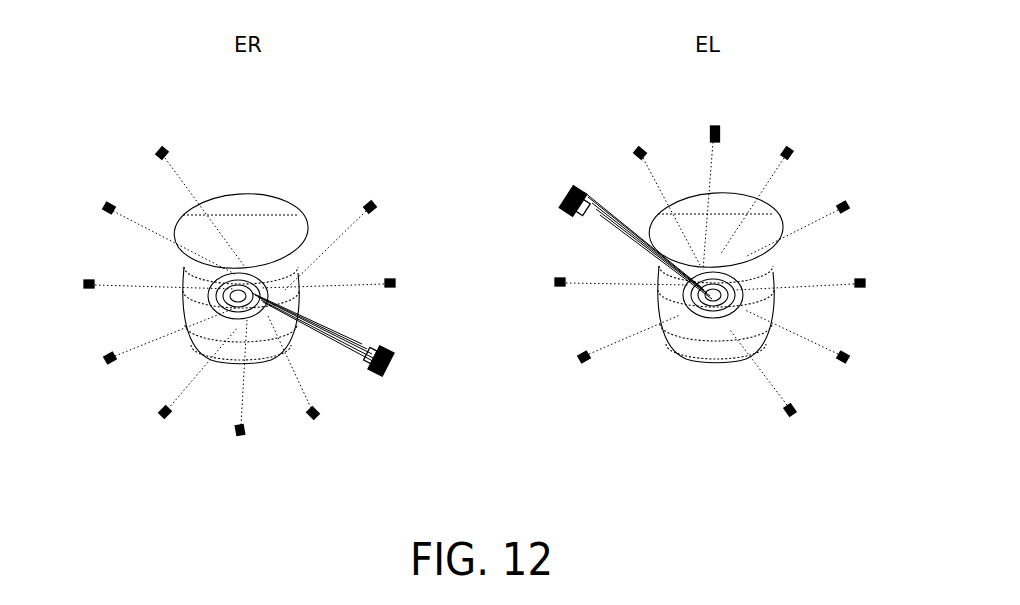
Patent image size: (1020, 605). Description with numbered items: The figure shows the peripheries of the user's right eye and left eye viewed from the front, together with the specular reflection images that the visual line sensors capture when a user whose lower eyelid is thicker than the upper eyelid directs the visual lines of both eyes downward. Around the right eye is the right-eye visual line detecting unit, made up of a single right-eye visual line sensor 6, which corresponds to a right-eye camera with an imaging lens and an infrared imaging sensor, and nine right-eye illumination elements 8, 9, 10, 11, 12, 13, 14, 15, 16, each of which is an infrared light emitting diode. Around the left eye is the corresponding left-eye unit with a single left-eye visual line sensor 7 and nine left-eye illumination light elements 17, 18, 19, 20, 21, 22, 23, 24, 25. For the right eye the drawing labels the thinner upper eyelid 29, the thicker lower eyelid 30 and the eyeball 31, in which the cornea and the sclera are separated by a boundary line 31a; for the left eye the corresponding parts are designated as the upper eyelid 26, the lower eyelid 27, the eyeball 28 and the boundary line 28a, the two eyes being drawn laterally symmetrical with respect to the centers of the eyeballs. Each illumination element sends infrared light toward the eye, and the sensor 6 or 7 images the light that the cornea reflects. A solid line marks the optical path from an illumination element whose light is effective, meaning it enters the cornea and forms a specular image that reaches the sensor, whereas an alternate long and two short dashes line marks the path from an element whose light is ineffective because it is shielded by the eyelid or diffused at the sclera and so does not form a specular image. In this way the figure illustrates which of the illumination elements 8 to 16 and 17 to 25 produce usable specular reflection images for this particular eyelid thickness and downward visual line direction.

The right-eye visual line sensor 6 is at (388, 374).
The left-eye visual line sensor 7 is at (567, 188).
The right-eye illumination element 8 is at (163, 149).
The right-eye illumination element 9 is at (103, 206).
The right-eye illumination element 10 is at (92, 279).
The right-eye illumination element 11 is at (106, 358).
The right-eye illumination element 12 is at (161, 414).
The right-eye illumination element 13 is at (241, 436).
The right-eye illumination element 14 is at (315, 417).
The right-eye illumination element 15 is at (396, 283).
The right-eye illumination element 16 is at (374, 204).
The left-eye illumination light element 17 is at (793, 408).
The left-eye illumination light element 18 is at (845, 362).
The left-eye illumination light element 19 is at (865, 285).
The left-eye illumination light element 20 is at (848, 210).
The left-eye illumination light element 21 is at (790, 149).
The left-eye illumination light element 22 is at (719, 131).
The left-eye illumination light element 23 is at (643, 148).
The left-eye illumination light element 24 is at (562, 280).
The left-eye illumination light element 25 is at (579, 355).
The upper eyelid 26 is at (737, 237).
The lower eyelid 27 is at (682, 352).
The eyeball 28 is at (722, 300).
The boundary line 28a is at (680, 294).
The upper eyelid 29 is at (263, 250).
The lower eyelid 30 is at (275, 347).
The eyeball 31 is at (252, 300).
The boundary line 31a is at (197, 290).